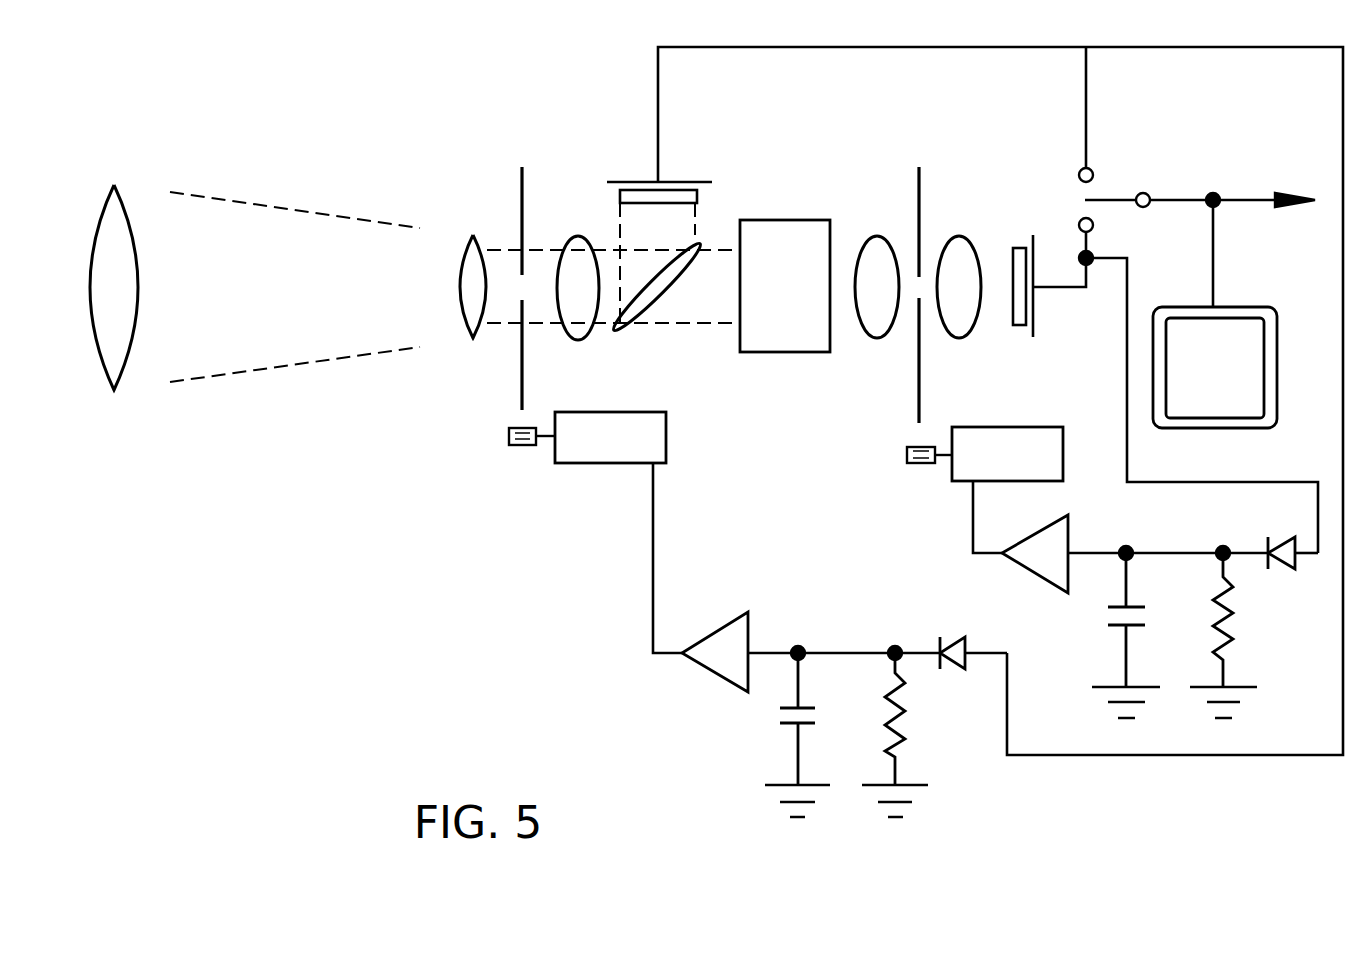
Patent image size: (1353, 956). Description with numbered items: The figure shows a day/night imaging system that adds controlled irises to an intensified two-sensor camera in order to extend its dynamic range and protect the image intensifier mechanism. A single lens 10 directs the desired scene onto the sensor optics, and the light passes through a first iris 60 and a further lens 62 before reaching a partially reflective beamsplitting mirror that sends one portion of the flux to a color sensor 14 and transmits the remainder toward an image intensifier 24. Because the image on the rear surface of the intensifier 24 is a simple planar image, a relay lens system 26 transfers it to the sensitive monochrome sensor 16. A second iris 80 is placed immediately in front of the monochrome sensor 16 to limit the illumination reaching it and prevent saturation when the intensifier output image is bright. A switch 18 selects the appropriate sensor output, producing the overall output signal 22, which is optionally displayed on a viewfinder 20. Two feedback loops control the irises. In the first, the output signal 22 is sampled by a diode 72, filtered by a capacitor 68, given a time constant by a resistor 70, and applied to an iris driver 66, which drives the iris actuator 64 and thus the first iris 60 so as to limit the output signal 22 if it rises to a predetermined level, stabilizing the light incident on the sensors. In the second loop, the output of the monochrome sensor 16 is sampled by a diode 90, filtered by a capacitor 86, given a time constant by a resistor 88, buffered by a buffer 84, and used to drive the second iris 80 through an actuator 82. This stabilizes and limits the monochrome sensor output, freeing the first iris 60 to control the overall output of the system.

The lens 10 is at (487, 143).
The iris 60 is at (517, 170).
The lens 62 is at (592, 236).
The color sensor 14 is at (640, 181).
The image intensifier 24 is at (747, 352).
The relay lens system 26 is at (975, 172).
The second iris 80 is at (912, 340).
The monochrome sensor 16 is at (1036, 305).
The switch 18 is at (1113, 173).
The sensor output signal 22 is at (1242, 201).
The viewfinder 20 is at (1277, 400).
The iris actuator 64 is at (535, 460).
The actuator 82 is at (930, 473).
The buffer 84 is at (1050, 523).
The diode 90 is at (1269, 530).
The capacitor 86 is at (1102, 620).
The resistor 88 is at (1245, 623).
The iris driver 66 is at (720, 628).
The diode 72 is at (937, 628).
The capacitor 68 is at (773, 722).
The resistor 70 is at (918, 728).